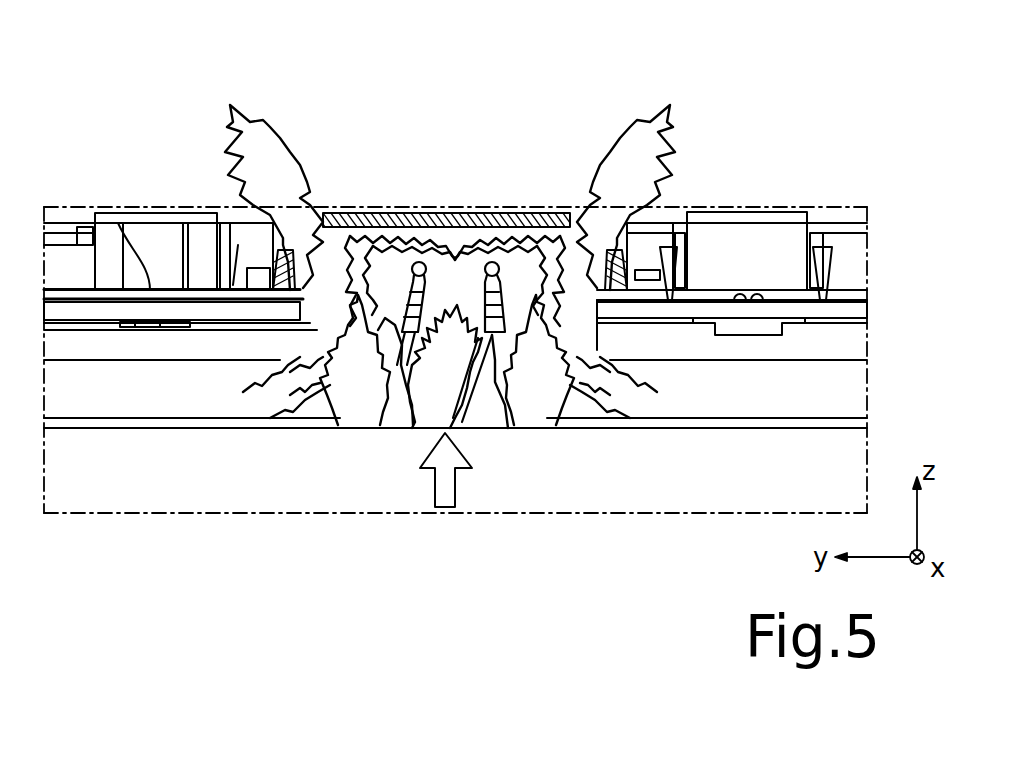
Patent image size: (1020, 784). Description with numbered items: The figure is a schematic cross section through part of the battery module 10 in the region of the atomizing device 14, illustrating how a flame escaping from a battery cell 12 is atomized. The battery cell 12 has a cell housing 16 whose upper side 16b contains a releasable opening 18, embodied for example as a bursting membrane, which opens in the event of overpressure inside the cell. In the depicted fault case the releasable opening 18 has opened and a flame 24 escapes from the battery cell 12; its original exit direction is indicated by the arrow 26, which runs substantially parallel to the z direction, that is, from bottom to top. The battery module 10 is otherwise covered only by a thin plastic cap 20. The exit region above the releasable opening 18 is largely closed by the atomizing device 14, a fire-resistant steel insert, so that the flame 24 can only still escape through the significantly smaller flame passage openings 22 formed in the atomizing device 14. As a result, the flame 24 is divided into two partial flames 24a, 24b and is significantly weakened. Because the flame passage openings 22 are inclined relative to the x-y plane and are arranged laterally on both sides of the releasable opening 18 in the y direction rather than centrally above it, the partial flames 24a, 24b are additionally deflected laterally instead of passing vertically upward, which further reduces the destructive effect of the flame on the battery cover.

The battery module 10 is at (167, 155).
The battery cell 12 is at (826, 396).
The atomizing device 14 is at (479, 199).
The cell housing 16 is at (808, 331).
The upper side 16b is at (825, 335).
The releasable opening 18 is at (505, 410).
The plastic cap 20 is at (120, 215).
The flame passage opening 22 is at (300, 198).
The flame 24 is at (420, 379).
The partial flame 24a is at (268, 128).
The partial flame 24b is at (640, 120).
The arrow 26 is at (435, 497).